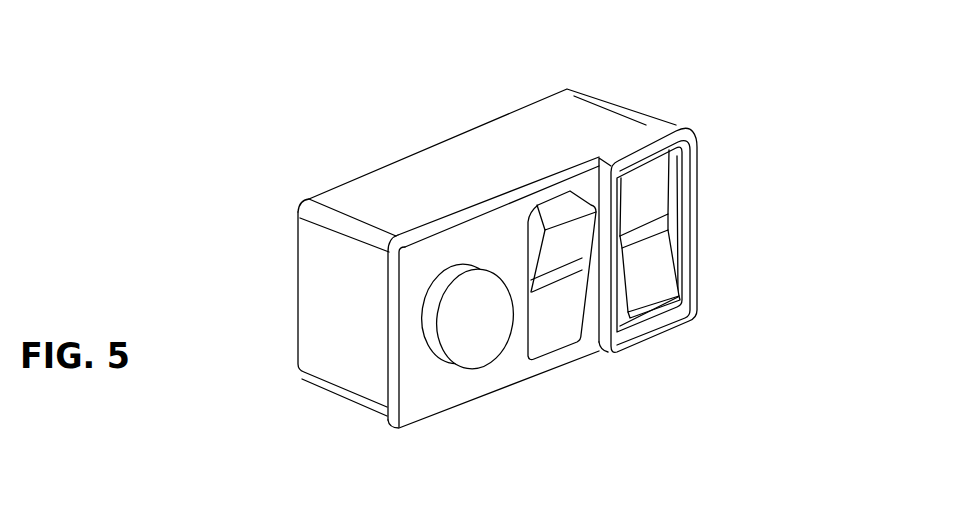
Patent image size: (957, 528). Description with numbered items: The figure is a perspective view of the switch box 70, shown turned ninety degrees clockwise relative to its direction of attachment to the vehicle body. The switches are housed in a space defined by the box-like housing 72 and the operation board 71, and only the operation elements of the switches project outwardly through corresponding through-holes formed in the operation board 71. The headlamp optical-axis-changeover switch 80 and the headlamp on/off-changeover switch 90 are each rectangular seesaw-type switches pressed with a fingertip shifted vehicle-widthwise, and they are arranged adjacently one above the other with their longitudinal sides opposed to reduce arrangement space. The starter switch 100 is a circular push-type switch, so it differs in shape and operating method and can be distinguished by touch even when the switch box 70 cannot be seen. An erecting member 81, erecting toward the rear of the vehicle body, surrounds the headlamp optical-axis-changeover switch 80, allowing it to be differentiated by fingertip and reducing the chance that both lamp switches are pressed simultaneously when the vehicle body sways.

The switch box 70 is at (430, 270).
The operation board 71 is at (422, 402).
The housing 72 is at (502, 130).
The headlamp optical-axis-changeover switch 80 is at (653, 300).
The erecting member 81 is at (687, 177).
The headlamp on/off-changeover switch 90 is at (560, 330).
The starter switch 100 is at (475, 337).